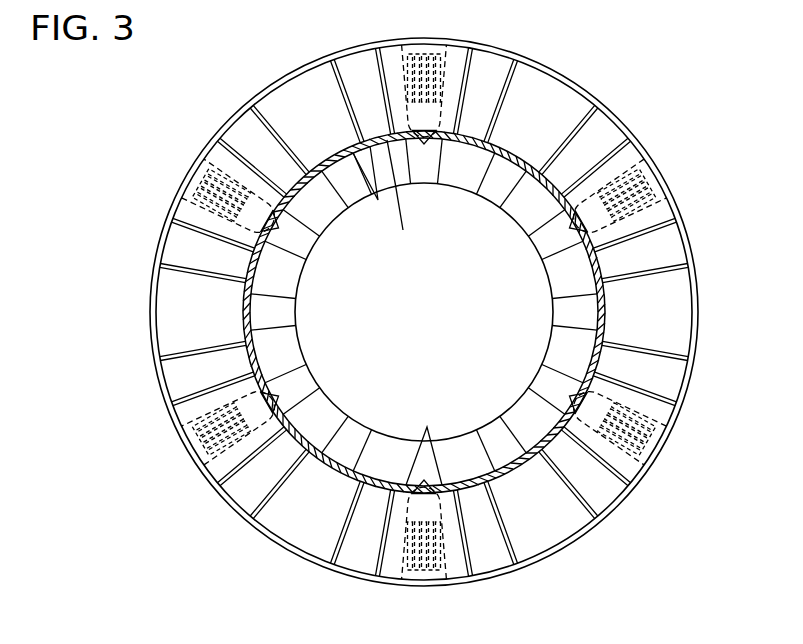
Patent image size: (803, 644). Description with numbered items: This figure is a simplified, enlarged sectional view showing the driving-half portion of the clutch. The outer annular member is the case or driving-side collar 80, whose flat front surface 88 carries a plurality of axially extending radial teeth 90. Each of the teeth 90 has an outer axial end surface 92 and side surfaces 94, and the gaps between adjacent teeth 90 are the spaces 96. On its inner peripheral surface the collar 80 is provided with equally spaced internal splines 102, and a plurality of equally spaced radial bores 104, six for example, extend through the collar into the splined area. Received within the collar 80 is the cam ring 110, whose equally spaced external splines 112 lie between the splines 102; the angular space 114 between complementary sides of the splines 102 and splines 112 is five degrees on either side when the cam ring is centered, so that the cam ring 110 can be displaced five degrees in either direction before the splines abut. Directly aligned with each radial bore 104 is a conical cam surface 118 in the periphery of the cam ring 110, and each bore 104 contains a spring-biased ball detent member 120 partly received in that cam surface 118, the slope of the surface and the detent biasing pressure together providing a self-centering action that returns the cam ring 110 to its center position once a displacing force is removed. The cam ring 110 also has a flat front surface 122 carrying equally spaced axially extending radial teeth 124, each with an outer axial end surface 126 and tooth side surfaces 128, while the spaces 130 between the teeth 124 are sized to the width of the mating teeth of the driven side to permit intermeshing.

The driving-side collar 80 is at (275, 558).
The flat front surface 88 is at (548, 102).
The radial teeth 90 is at (655, 347).
The outer axial end surfaces 92 is at (500, 553).
The side surfaces 94 is at (648, 227).
The spaces between teeth 96 is at (287, 88).
The internal splines 102 is at (403, 228).
The radial bores 104 is at (207, 163).
The cam ring 110 is at (300, 318).
The external splines 112 is at (348, 155).
The angular space 114 is at (378, 201).
The conical cam surface 118 is at (240, 283).
The spring-biased ball detent member 120 is at (180, 206).
The flat front surface 122 is at (302, 385).
The radial teeth 124 is at (323, 207).
The outer axial end surface 126 is at (288, 352).
The tooth side surfaces 128 is at (427, 427).
The spaces between teeth 130 is at (553, 310).